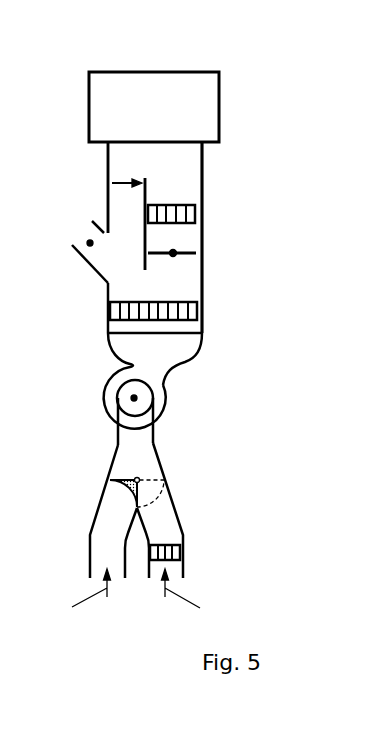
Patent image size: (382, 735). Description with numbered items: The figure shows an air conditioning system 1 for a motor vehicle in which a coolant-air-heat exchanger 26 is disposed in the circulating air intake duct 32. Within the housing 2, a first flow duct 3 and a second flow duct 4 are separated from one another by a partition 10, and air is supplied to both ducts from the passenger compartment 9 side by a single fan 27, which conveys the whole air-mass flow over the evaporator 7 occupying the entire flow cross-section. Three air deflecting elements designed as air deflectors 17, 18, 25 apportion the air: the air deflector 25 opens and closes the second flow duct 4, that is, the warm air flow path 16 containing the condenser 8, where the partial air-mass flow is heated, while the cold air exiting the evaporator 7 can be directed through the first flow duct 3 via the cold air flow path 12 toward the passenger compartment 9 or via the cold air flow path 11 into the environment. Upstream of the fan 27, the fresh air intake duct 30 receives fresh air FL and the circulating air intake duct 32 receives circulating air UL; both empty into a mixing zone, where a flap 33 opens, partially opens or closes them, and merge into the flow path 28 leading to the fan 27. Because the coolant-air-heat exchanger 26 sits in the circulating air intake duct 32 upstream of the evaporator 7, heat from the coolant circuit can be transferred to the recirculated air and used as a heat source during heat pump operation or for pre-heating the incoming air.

The air conditioning system 1 is at (237, 107).
The housing 2 is at (108, 165).
The first flow duct 3 is at (92, 203).
The second flow duct 4 is at (222, 237).
The evaporator 7 is at (187, 312).
The condenser 8 is at (190, 215).
The passenger compartment 9 is at (151, 117).
The partition 10 is at (145, 270).
The cold air flow path 11 is at (66, 235).
The cold air flow path 12 is at (118, 175).
The warm air flow path 16 is at (164, 190).
The air deflector 17 is at (88, 245).
The air deflector 18 is at (139, 184).
The air deflector 25 is at (193, 254).
The coolant-air-heat exchanger 26 is at (180, 558).
The fan 27 is at (134, 398).
The flow path 28 is at (128, 452).
The fresh air intake duct 30 is at (107, 530).
The circulating air intake duct 32 is at (163, 530).
The flap 33 is at (127, 490).